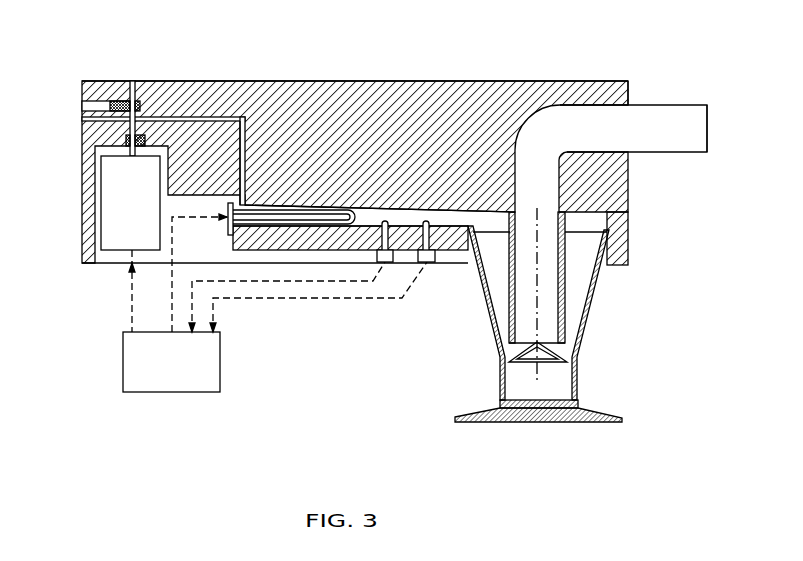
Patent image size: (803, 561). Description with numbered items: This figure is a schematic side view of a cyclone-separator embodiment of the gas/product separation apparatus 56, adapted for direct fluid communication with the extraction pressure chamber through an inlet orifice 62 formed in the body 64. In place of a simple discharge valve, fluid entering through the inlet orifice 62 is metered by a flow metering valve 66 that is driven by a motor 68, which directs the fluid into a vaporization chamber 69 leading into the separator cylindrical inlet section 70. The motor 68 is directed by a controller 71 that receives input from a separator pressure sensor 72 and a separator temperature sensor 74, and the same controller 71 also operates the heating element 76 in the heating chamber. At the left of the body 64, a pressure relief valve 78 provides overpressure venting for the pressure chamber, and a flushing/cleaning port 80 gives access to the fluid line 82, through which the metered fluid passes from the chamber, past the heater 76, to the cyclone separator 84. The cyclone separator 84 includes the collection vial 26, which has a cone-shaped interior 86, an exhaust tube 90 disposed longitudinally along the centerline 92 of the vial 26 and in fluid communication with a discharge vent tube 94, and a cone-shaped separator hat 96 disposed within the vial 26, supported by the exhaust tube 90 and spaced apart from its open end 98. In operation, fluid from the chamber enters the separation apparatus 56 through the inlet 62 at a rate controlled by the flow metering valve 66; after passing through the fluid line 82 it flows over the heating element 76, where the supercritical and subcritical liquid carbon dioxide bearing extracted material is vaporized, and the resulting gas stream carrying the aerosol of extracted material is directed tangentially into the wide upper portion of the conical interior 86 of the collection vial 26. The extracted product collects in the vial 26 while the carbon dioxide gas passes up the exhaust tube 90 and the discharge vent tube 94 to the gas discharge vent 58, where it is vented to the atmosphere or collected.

The collection vial 26 is at (646, 315).
The gas/product separation apparatus 56 is at (725, 192).
The gas discharge vent 58 is at (741, 127).
The inlet orifice 62 is at (96, 92).
The body 64 is at (355, 149).
The flow metering valve 66 is at (167, 83).
The motor 68 is at (103, 227).
The vaporization chamber 69 is at (374, 287).
The separator cylindrical inlet section 70 is at (588, 229).
The controller 71 is at (239, 303).
The separator pressure sensor 72 is at (345, 312).
The separator temperature sensor 74 is at (382, 326).
The heating element 76 is at (291, 274).
The pressure relief valve 78 is at (84, 94).
The flushing/cleaning port 80 is at (128, 134).
The fluid line 82 is at (259, 120).
The cyclone separator 84 is at (493, 333).
The cone-shaped interior 86 is at (569, 362).
The exhaust tube 90 is at (563, 310).
The centerline 92 is at (616, 273).
The discharge vent tube 94 is at (648, 107).
The cone-shaped separator hat 96 is at (583, 399).
The open end 98 is at (567, 343).